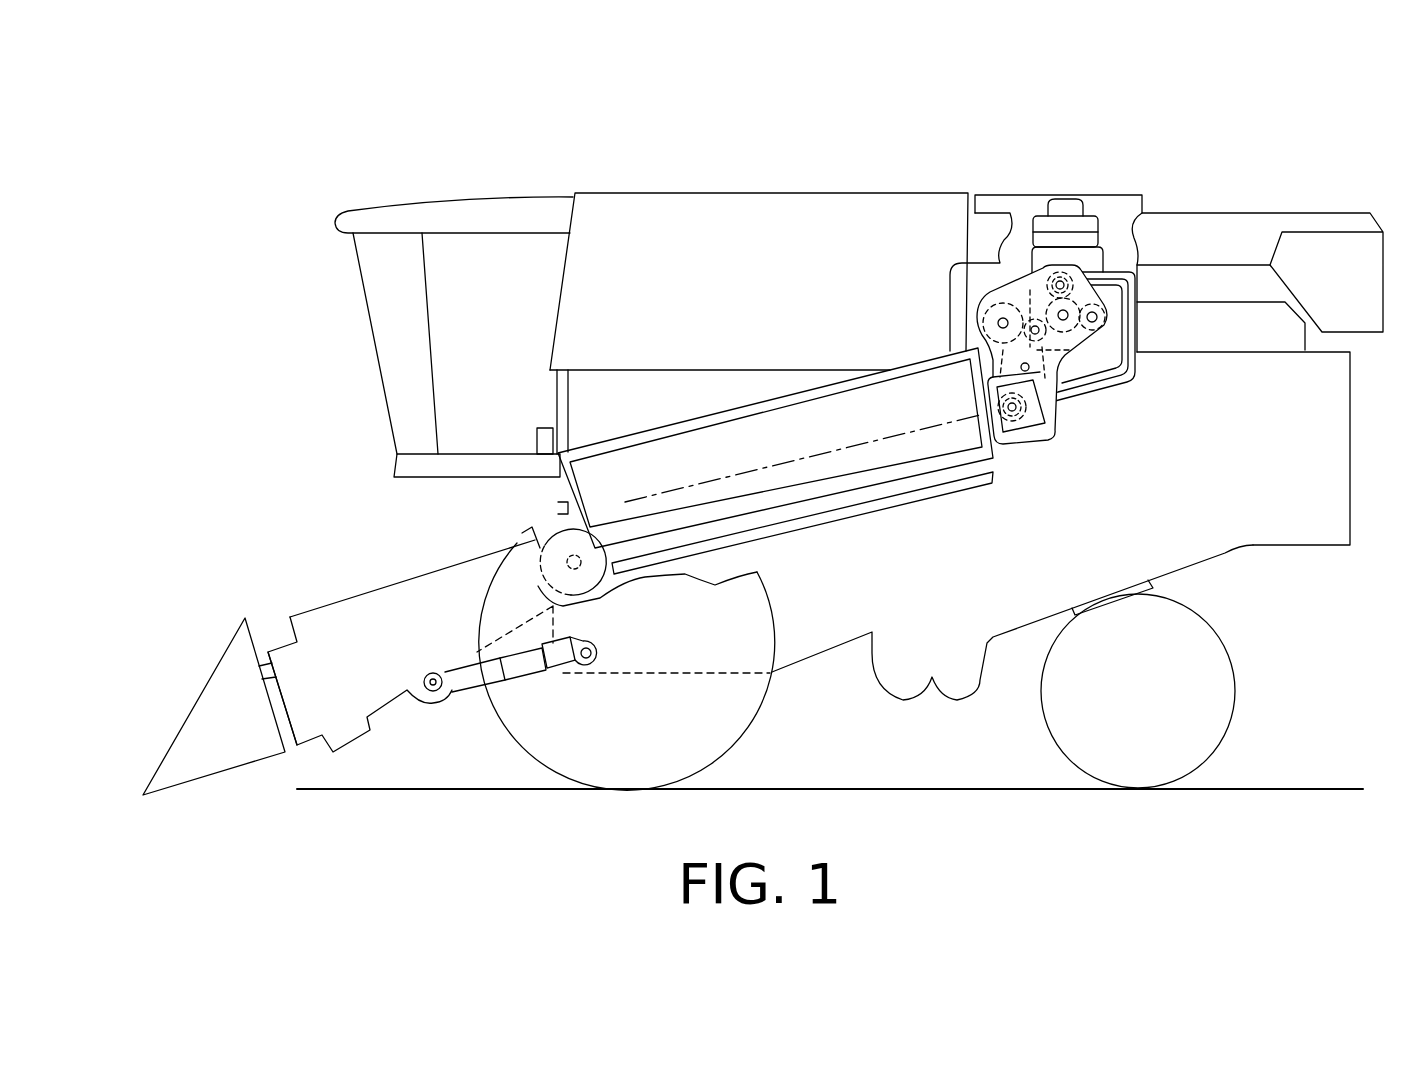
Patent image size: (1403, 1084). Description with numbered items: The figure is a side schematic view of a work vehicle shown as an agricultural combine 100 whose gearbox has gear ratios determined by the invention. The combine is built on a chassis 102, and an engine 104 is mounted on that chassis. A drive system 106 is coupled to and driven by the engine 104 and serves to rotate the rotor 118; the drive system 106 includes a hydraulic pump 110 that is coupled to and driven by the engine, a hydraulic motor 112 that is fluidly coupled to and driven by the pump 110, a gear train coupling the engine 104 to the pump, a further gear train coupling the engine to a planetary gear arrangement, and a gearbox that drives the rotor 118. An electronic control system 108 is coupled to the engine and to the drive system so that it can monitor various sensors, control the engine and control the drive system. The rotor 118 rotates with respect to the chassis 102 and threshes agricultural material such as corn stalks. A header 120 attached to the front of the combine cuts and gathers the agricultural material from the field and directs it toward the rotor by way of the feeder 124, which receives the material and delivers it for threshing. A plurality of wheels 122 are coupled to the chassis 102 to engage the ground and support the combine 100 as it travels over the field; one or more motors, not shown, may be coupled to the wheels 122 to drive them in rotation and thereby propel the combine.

The agricultural combine 100 is at (786, 173).
The chassis 102 is at (853, 563).
The engine 104 is at (1067, 208).
The drive system 106 is at (1154, 404).
The electronic control system 108 is at (537, 440).
The hydraulic pump 110 is at (1070, 285).
The hydraulic motor 112 is at (1023, 437).
The rotor 118 is at (745, 425).
The header 120 is at (203, 687).
The wheels 122 is at (592, 722).
The feeder 124 is at (512, 538).